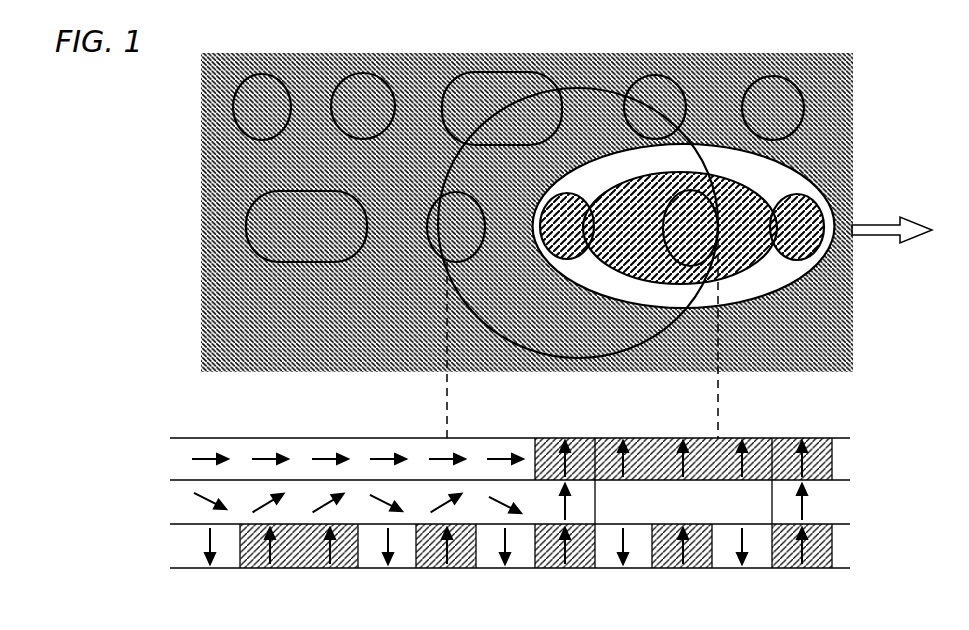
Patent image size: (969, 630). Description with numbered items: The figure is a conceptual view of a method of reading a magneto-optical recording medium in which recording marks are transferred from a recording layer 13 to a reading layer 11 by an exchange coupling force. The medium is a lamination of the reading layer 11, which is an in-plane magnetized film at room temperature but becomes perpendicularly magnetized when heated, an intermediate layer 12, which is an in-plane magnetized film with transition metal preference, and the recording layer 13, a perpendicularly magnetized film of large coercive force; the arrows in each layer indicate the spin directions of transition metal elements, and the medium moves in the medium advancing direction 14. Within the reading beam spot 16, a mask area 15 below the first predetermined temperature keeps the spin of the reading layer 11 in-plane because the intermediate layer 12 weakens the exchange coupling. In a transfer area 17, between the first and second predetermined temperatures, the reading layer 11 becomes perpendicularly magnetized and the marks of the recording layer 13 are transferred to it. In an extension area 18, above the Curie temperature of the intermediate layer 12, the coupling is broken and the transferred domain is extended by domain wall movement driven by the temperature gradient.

The reading layer 11 is at (531, 459).
The intermediate layer 12 is at (542, 502).
The recording layer 13 is at (531, 546).
The medium advancing direction 14 is at (892, 215).
The mask area 15 is at (470, 192).
The reading beam spot 16 is at (605, 90).
The transfer area 17 is at (572, 200).
The extension area 18 is at (646, 200).